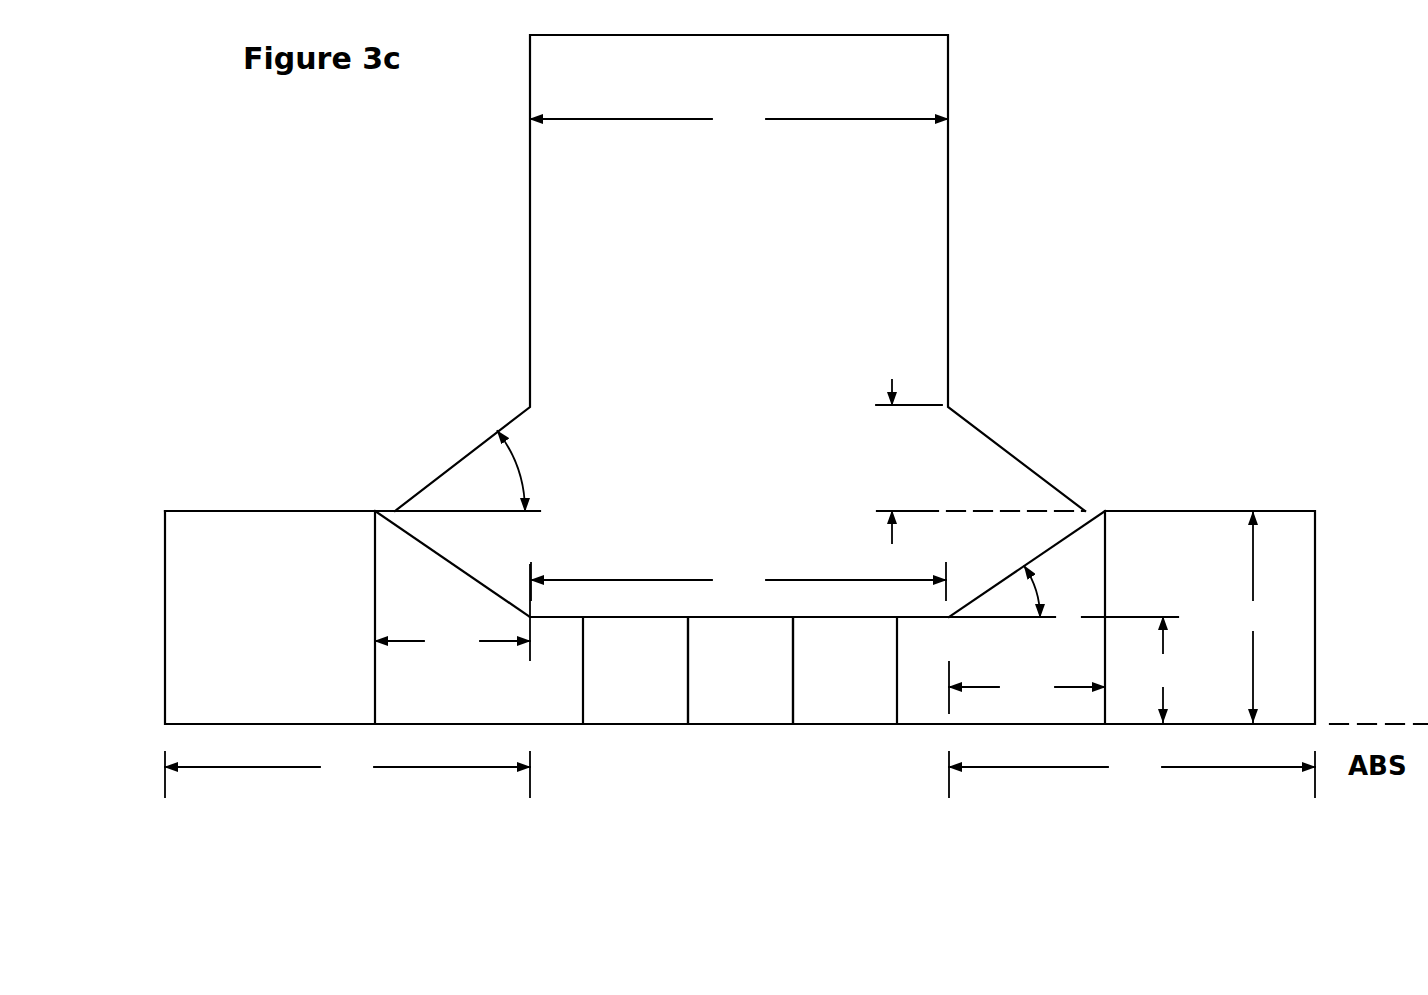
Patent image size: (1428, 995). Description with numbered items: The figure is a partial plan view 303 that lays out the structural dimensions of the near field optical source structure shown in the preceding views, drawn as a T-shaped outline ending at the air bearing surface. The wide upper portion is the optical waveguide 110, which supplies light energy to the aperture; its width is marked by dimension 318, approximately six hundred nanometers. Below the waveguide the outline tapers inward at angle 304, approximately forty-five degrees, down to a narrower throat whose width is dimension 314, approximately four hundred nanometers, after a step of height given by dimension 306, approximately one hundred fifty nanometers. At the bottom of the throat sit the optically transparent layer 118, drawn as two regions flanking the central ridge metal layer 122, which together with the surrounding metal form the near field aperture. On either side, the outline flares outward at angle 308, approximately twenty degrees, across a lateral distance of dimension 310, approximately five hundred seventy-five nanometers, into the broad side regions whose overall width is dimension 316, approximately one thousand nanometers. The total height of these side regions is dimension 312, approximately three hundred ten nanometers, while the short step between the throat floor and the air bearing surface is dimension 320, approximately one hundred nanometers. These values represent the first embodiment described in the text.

The optical waveguide 110 is at (740, 273).
The optically transparent layer 118 is at (740, 670).
The ridge metal layer 122 is at (740, 670).
The partial plan view 303 is at (1078, 112).
The angle 304 is at (525, 468).
The dimension 306 is at (892, 380).
The angle 308 is at (1045, 588).
The dimension 310 is at (740, 639).
The dimension 312 is at (1253, 617).
The dimension 314 is at (738, 581).
The dimension 316 is at (740, 774).
The dimension 318 is at (739, 120).
The dimension 320 is at (1163, 669).